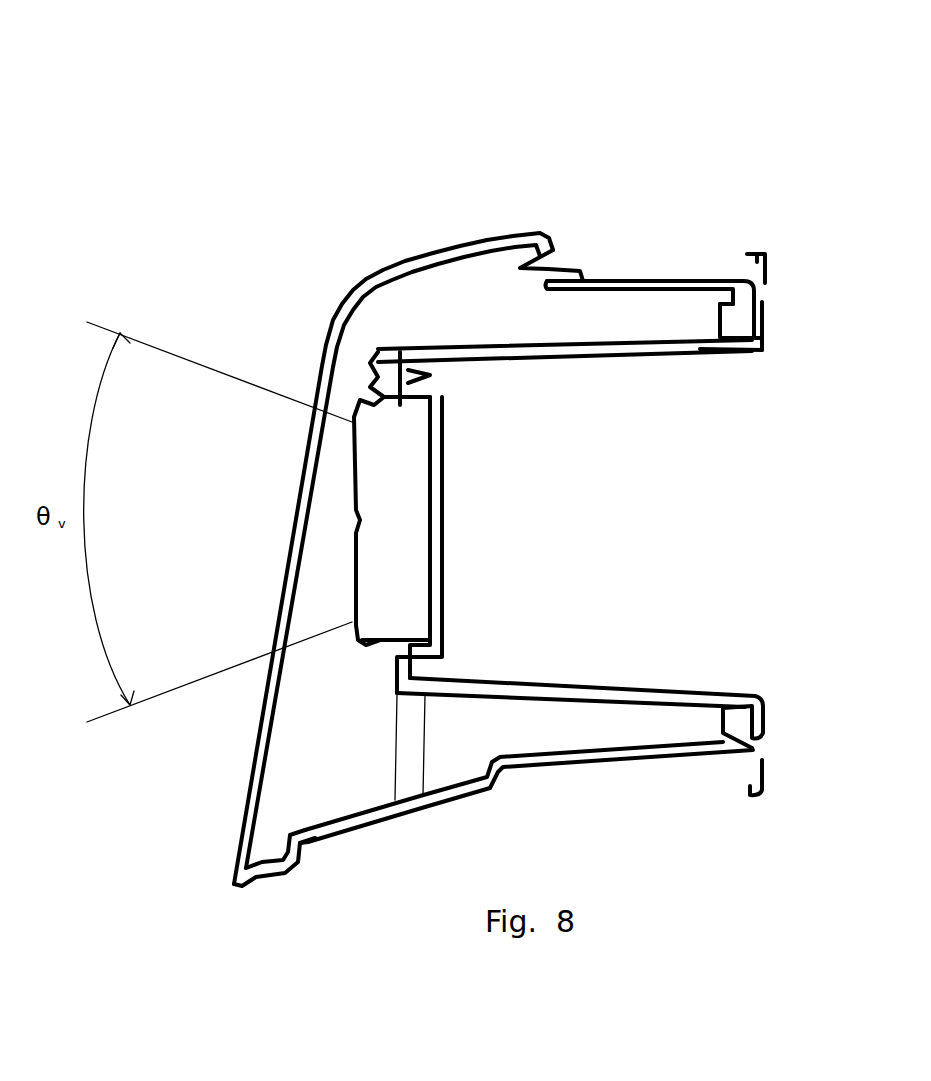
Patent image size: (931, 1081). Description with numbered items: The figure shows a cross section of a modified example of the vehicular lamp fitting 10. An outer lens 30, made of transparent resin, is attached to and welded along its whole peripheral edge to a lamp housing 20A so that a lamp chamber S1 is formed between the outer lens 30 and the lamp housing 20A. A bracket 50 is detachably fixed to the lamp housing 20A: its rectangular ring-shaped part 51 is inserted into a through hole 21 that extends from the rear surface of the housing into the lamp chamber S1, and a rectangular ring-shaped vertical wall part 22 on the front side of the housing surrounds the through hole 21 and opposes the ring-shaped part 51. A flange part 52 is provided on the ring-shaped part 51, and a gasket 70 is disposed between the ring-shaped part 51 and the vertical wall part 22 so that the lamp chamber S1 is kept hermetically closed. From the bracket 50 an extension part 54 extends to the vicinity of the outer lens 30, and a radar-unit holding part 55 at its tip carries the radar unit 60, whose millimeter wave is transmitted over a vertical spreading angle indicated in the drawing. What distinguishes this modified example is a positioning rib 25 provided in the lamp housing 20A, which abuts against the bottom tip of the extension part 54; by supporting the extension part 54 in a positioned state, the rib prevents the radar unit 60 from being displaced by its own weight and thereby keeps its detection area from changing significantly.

The vehicular lamp fitting 10 is at (493, 96).
The lamp housing 20A is at (666, 281).
The through hole 21 is at (720, 338).
The rectangular ring-shaped vertical wall part 22 is at (764, 298).
The positioning rib 25 is at (430, 740).
The outer lens 30 is at (298, 465).
The bracket 50 is at (526, 349).
The rectangular ring-shaped part 51 is at (740, 358).
The flange part 52 is at (776, 322).
The extension part 54 is at (478, 348).
The radar-unit holding part 55 is at (447, 506).
The radar unit 60 is at (383, 632).
The gasket 70 is at (728, 352).
The lamp chamber S1 is at (344, 750).